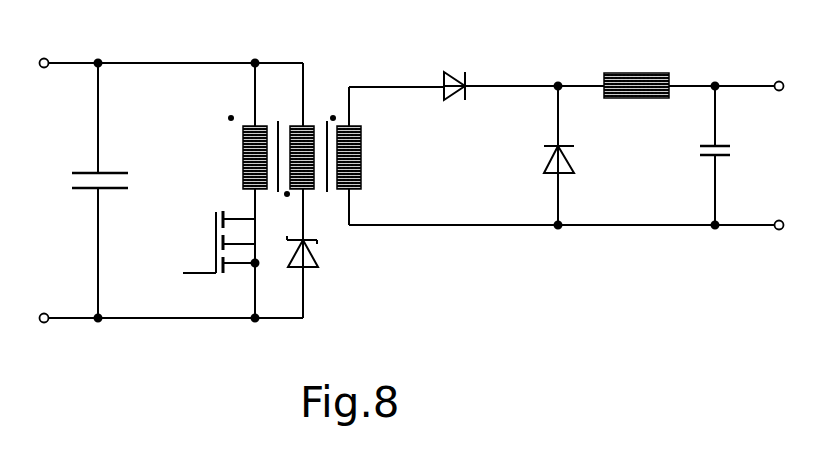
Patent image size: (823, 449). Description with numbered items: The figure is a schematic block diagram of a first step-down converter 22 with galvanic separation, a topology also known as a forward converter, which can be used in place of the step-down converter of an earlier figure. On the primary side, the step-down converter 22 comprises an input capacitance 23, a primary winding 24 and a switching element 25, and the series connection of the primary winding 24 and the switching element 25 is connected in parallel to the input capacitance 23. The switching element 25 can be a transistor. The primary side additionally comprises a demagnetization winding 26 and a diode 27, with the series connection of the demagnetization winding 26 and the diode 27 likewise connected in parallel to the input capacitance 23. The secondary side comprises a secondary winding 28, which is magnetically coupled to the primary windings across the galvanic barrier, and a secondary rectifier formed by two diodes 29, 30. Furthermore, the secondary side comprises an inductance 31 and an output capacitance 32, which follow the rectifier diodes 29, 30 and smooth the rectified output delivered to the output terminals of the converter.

The step-down converter 22 is at (143, 349).
The input capacitance 23 is at (116, 172).
The primary winding 24 is at (243, 156).
The switching element 25 is at (215, 222).
The demagnetization winding 26 is at (307, 122).
The diode 27 is at (308, 263).
The secondary winding 28 is at (362, 158).
The diode 29 is at (445, 71).
The diode 30 is at (547, 163).
The inductance 31 is at (636, 72).
The output capacitance 32 is at (710, 157).